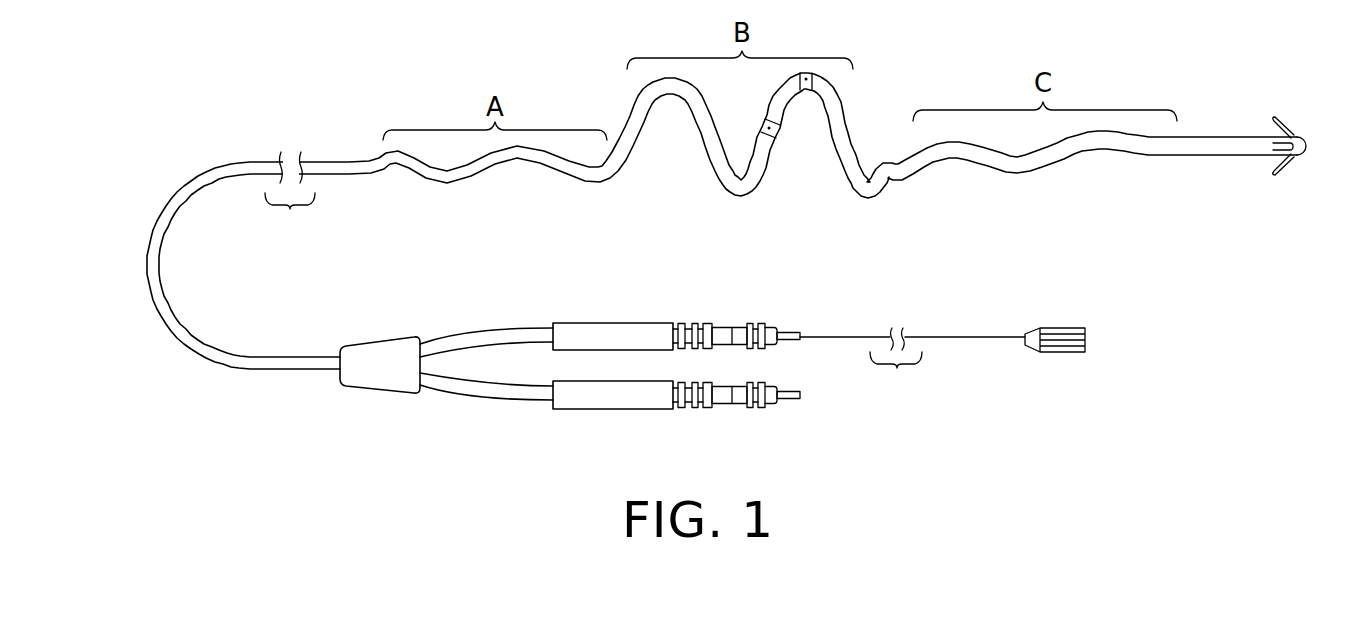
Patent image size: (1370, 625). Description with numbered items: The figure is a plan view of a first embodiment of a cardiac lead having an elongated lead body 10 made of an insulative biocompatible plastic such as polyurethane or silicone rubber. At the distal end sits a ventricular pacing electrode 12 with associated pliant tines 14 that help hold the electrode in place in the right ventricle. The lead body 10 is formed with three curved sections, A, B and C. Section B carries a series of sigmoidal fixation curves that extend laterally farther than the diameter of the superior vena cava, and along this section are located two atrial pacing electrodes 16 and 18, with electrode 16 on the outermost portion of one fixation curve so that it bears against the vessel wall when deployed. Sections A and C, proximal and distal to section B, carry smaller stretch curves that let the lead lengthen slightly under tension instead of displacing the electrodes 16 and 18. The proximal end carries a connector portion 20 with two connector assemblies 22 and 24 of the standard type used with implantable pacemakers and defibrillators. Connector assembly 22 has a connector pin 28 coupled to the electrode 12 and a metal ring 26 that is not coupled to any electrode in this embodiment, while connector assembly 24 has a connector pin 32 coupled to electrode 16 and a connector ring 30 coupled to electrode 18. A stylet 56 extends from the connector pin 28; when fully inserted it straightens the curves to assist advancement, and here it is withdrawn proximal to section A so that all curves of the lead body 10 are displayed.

The lead body 10 is at (252, 145).
The ventricular pacing electrode 12 is at (1307, 146).
The pliant tines 14 is at (1293, 124).
The atrial pacing electrode 16 is at (812, 91).
The atrial pacing electrode 18 is at (779, 132).
The connector portion 20 is at (509, 433).
The connector assembly 22 is at (601, 322).
The connector assembly 24 is at (617, 411).
The metal ring 26 is at (725, 327).
The connector pin 28 is at (787, 331).
The connector ring 30 is at (725, 408).
The connector pin 32 is at (792, 402).
The stylet 56 is at (914, 333).